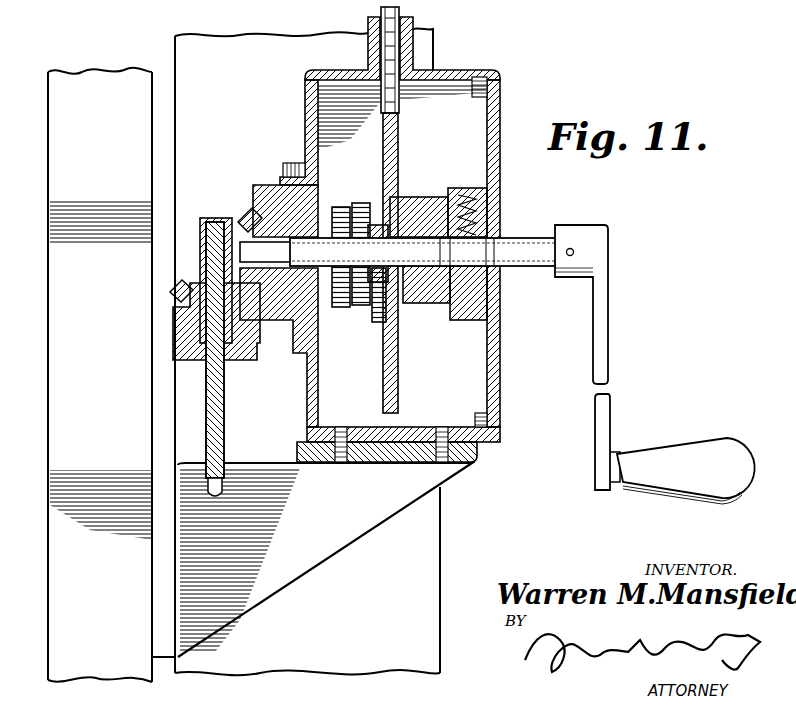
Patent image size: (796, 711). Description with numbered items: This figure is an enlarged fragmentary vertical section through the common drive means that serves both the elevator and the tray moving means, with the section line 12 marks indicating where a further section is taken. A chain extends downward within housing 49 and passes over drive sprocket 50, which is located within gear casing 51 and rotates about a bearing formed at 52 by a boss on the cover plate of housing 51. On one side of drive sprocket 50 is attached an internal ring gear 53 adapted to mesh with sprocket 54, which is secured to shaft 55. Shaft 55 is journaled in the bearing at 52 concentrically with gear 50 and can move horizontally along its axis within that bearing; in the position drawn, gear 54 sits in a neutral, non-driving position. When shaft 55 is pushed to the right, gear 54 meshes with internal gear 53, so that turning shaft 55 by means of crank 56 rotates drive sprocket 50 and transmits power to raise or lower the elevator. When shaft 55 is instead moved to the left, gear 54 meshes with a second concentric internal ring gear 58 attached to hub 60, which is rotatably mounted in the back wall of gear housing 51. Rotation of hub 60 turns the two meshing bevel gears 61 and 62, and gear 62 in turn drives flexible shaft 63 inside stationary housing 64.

The section line 12-12 / wall panel 12 is at (163, 203).
The housing 49 is at (413, 25).
The drive sprocket 50 is at (392, 145).
The gear casing 51 is at (312, 108).
The bearing 52 is at (435, 268).
The internal ring gear 53 is at (378, 322).
The sprocket 54 is at (360, 203).
The shaft 55 is at (428, 245).
The crank 56 is at (602, 308).
The second concentric internal ring gear 58 is at (340, 307).
The hub 60 is at (292, 318).
The bevel gear 61 is at (245, 214).
The bevel gear 62 is at (170, 292).
The flexible shaft 63 is at (222, 490).
The stationary housing 64 is at (222, 412).